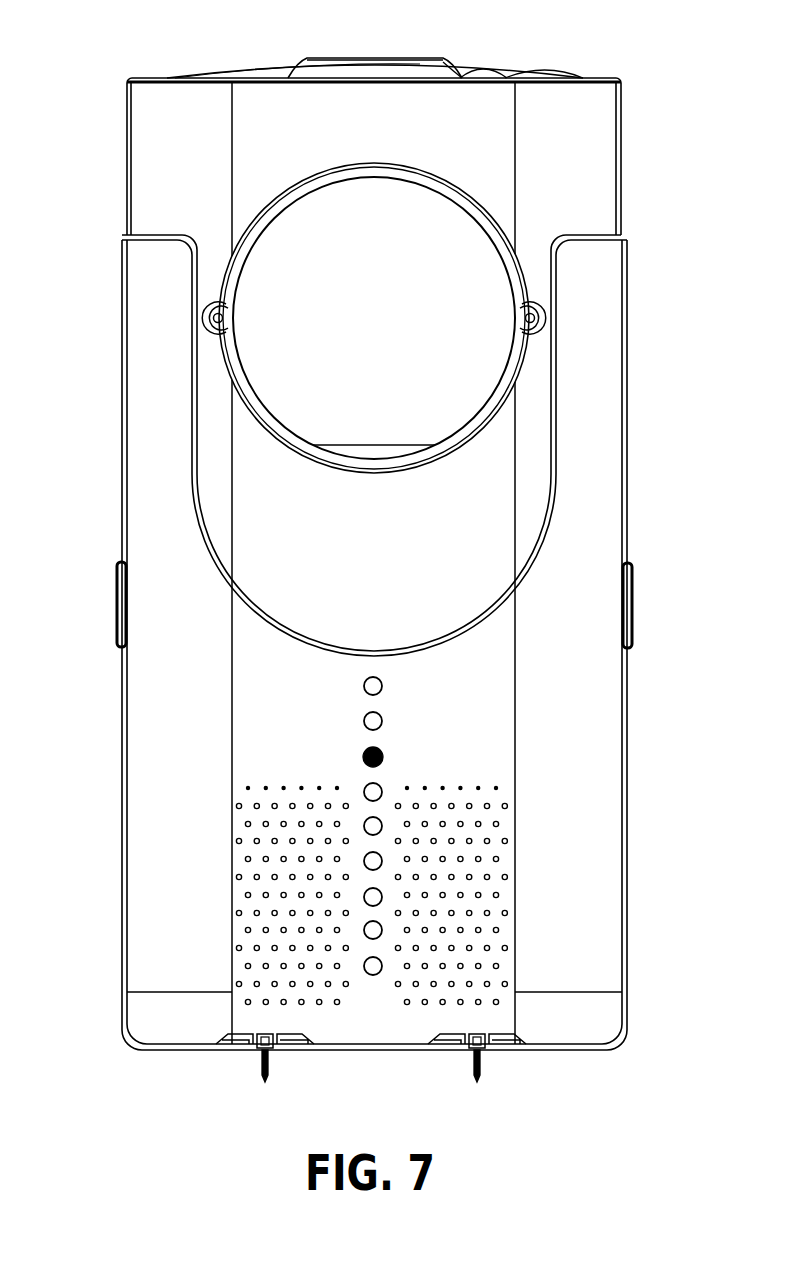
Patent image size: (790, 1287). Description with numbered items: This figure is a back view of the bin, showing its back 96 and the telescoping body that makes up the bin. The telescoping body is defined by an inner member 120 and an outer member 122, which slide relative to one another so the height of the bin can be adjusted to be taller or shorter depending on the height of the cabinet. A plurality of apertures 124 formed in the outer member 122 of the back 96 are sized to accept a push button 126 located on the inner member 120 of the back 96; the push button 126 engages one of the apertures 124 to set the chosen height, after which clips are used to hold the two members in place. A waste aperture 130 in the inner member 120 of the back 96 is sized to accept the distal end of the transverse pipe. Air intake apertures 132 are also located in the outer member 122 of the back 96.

The back 96 is at (553, 105).
The inner member 120 is at (590, 180).
The outer member 122 is at (600, 463).
The waste aperture 130 is at (327, 250).
The apertures 124 is at (371, 792).
The push button 126 is at (382, 757).
The air intake apertures 132 is at (415, 985).